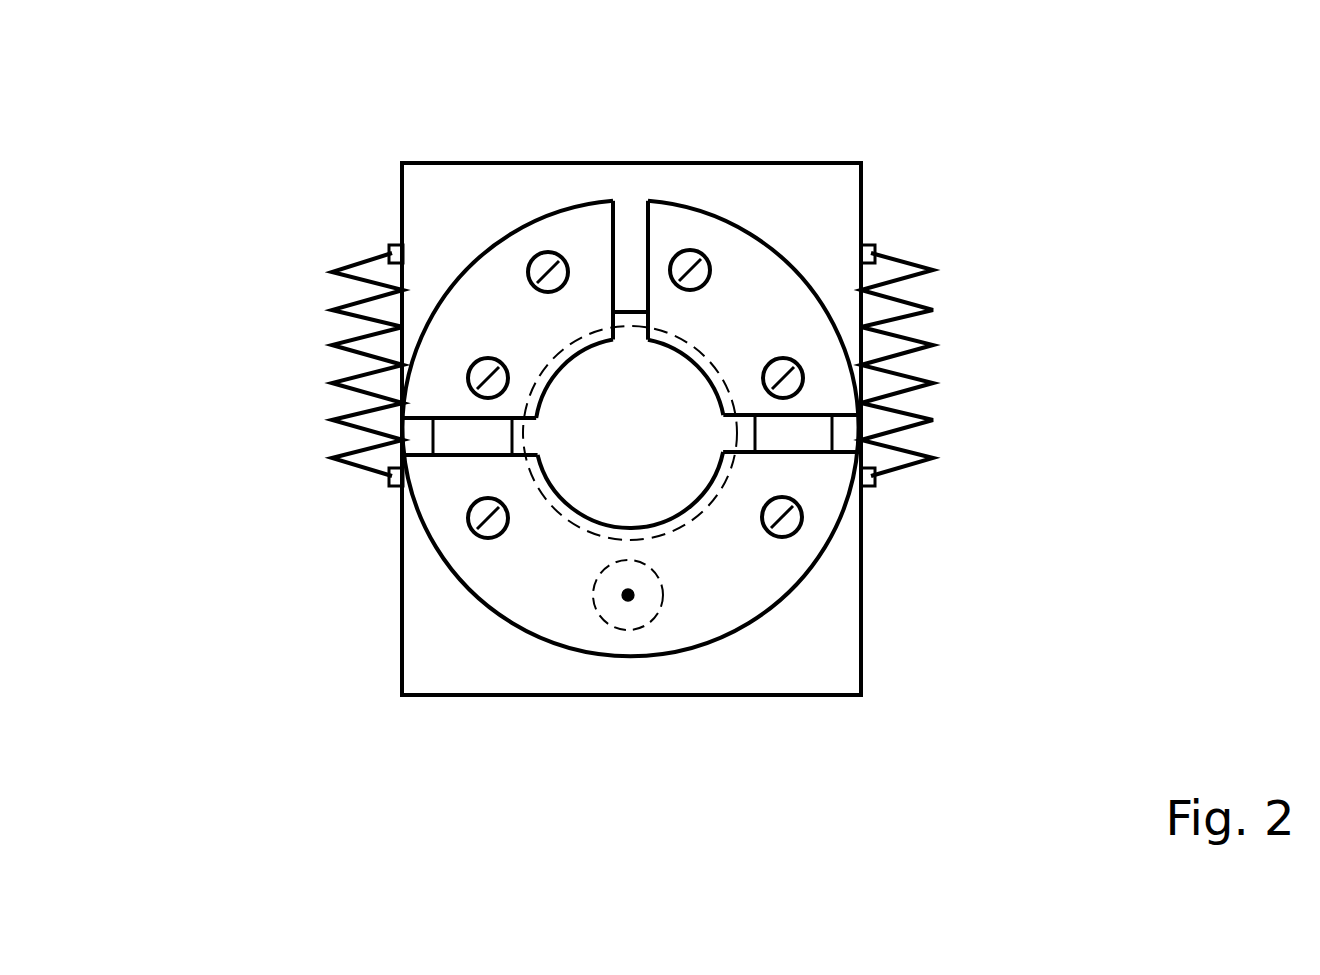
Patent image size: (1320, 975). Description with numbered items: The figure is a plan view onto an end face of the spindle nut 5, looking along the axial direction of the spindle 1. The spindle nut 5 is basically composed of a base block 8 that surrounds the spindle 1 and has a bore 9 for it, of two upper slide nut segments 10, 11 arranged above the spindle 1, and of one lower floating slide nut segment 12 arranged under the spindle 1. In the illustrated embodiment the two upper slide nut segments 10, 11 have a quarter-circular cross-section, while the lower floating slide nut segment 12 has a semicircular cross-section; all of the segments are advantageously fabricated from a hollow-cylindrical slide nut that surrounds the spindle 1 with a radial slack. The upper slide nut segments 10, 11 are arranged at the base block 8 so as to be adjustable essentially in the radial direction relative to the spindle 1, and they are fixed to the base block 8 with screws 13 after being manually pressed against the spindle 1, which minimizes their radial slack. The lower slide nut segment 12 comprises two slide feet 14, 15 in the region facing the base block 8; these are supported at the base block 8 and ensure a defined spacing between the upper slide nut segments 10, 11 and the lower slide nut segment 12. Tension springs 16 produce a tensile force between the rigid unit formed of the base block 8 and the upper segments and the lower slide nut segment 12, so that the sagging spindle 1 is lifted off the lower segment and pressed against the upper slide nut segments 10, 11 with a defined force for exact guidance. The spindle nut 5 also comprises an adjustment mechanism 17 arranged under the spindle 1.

The spindle 1 is at (622, 425).
The spindle nut 5 is at (328, 236).
The base block 8 is at (830, 207).
The bore 9 is at (712, 503).
The upper slide nut segment 10 is at (592, 232).
The upper slide nut segment 11 is at (670, 228).
The lower floating slide nut segment 12 is at (462, 663).
The screws 13 is at (467, 352).
The slide foot 14 is at (452, 435).
The slide foot 15 is at (787, 440).
The tension springs 16 is at (338, 308).
The adjustment mechanism 17 is at (630, 600).